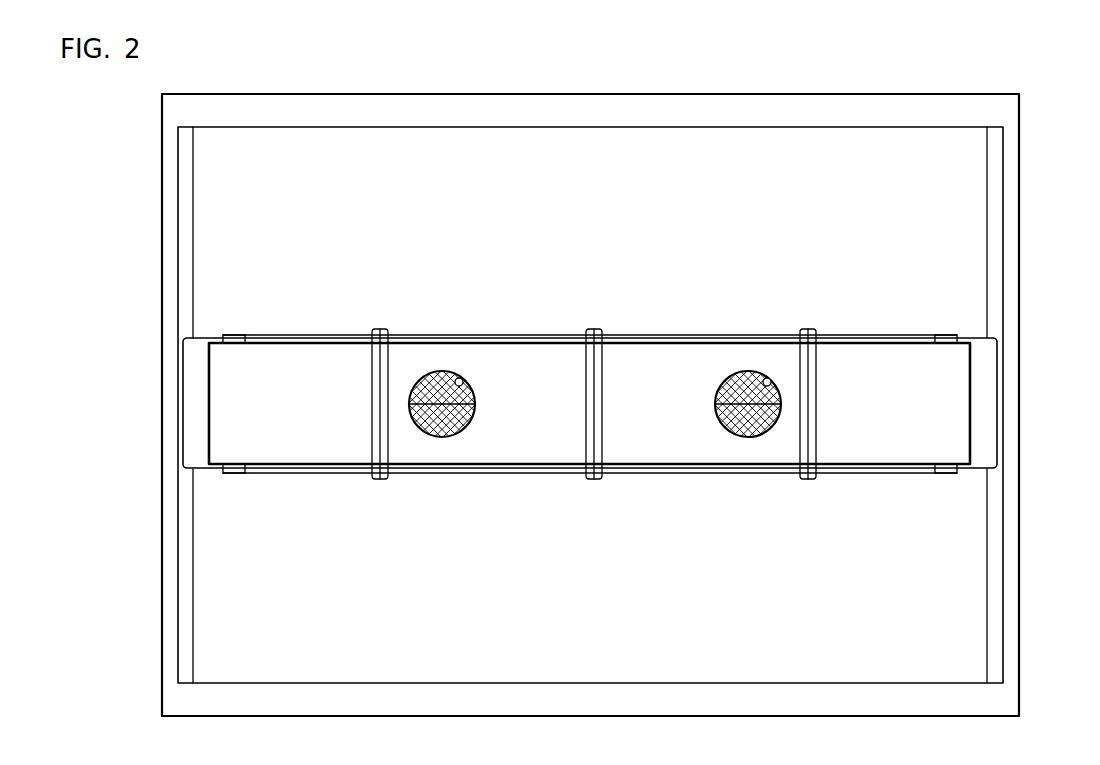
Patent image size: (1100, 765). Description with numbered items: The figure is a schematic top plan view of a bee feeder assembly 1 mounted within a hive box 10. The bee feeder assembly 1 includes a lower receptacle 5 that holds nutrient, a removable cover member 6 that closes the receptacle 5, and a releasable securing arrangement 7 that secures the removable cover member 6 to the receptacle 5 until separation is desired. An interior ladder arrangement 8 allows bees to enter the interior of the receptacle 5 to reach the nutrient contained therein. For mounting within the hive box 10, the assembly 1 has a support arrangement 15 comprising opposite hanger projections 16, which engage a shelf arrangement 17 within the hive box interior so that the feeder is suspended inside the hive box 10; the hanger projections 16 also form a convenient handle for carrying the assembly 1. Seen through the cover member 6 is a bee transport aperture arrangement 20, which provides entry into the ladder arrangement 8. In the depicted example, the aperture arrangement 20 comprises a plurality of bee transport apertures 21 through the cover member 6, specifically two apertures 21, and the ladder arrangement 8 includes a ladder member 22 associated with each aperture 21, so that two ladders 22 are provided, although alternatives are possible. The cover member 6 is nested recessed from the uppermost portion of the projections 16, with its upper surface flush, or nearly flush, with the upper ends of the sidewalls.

The bee feeder assembly 1 is at (698, 285).
The lower receptacle 5 is at (515, 337).
The removable cover member 6 is at (513, 395).
The releasable securing arrangement 7 is at (372, 394).
The interior ladder arrangement 8 is at (438, 385).
The hive box 10 is at (712, 94).
The support arrangement 15 is at (183, 376).
The hanger projections 16 is at (196, 431).
The shelf arrangement 17 is at (190, 210).
The bee transport aperture arrangement 20 is at (449, 441).
The bee transport apertures 21 is at (462, 379).
The ladder member 22 is at (418, 417).